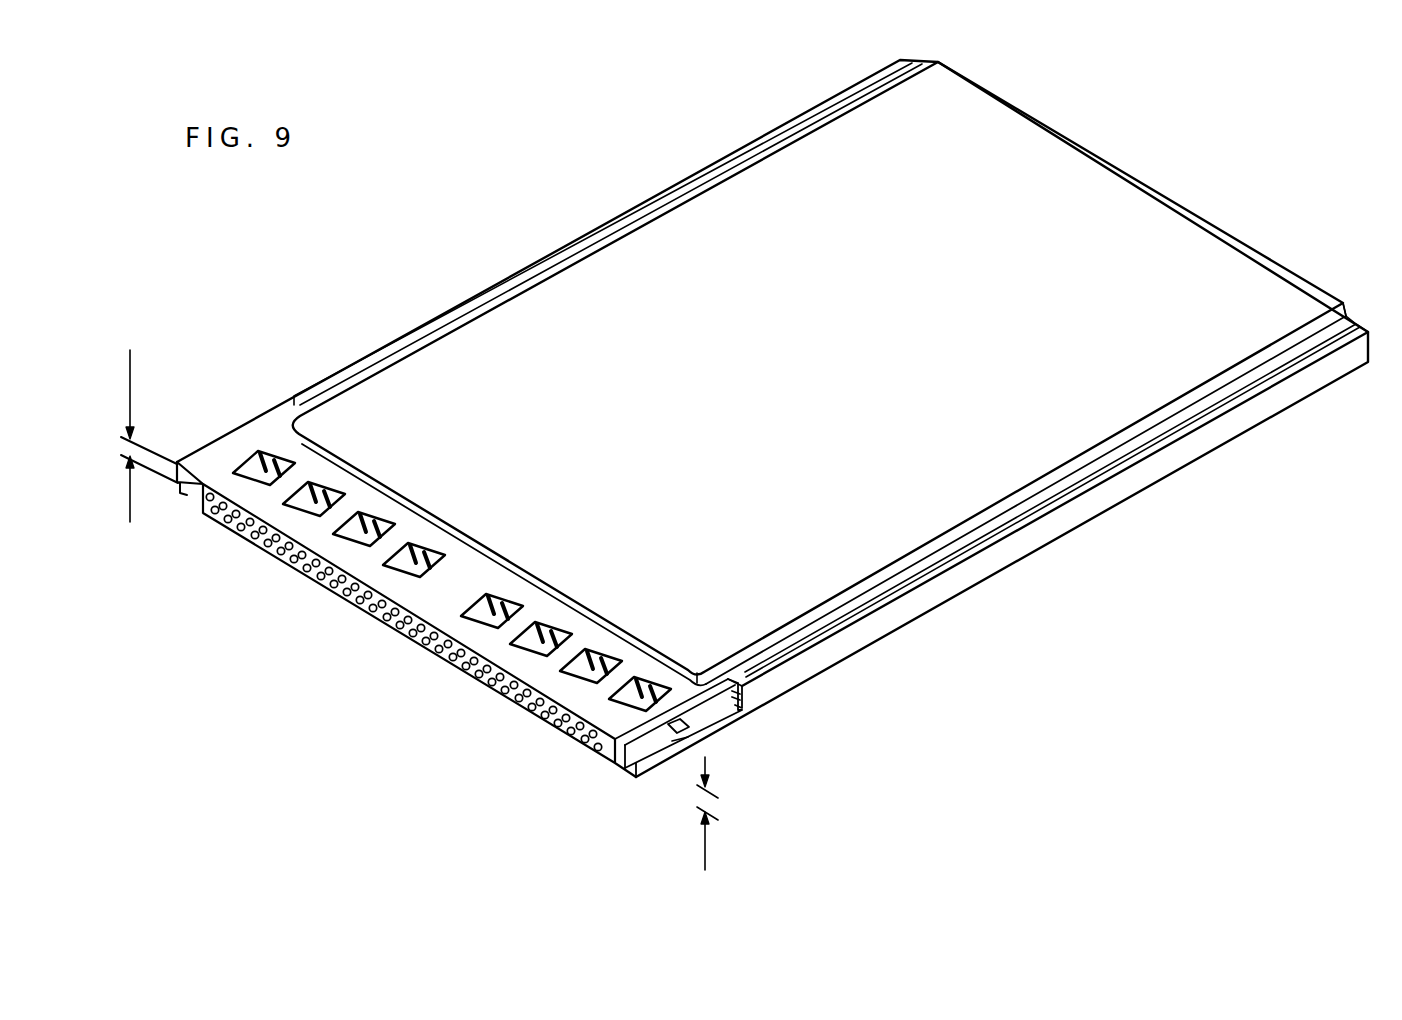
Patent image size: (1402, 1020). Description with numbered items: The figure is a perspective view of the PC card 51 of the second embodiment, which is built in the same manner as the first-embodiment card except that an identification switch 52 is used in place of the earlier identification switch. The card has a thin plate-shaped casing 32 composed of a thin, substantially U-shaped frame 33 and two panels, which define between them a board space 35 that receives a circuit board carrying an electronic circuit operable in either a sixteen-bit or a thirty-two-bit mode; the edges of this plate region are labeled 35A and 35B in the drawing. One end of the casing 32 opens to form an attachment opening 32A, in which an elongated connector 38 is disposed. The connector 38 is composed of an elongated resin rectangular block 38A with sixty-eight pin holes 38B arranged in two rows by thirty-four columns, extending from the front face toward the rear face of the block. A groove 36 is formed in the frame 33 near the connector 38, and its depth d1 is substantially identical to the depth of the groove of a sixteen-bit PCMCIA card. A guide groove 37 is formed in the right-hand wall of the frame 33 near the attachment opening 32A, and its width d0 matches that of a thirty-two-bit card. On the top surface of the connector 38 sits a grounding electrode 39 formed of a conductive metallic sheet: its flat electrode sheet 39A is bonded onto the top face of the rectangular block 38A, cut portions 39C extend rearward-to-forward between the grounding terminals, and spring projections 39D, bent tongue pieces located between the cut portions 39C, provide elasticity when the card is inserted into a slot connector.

The PC card 51 is at (1141, 146).
The casing 32 is at (513, 264).
The attachment opening 32A is at (613, 753).
The frame 33 is at (1002, 550).
The board space 35 is at (693, 232).
The front edge of heat radiation plate 35A is at (1093, 412).
The side edge of heat radiation plate 35B is at (275, 457).
The groove 36 is at (680, 740).
The guide groove 37 is at (178, 484).
The connector 38 is at (392, 610).
The rectangular block 38A is at (226, 512).
The pin holes 38B is at (327, 548).
The grounding electrode 39 is at (235, 474).
The electrode sheet 39A is at (284, 506).
The cut portions 39C is at (337, 545).
The spring projections 39D is at (472, 612).
The identification switch 52 is at (722, 719).
The width of the guide groove d0 is at (129, 417).
The depth of the groove d1 is at (702, 831).